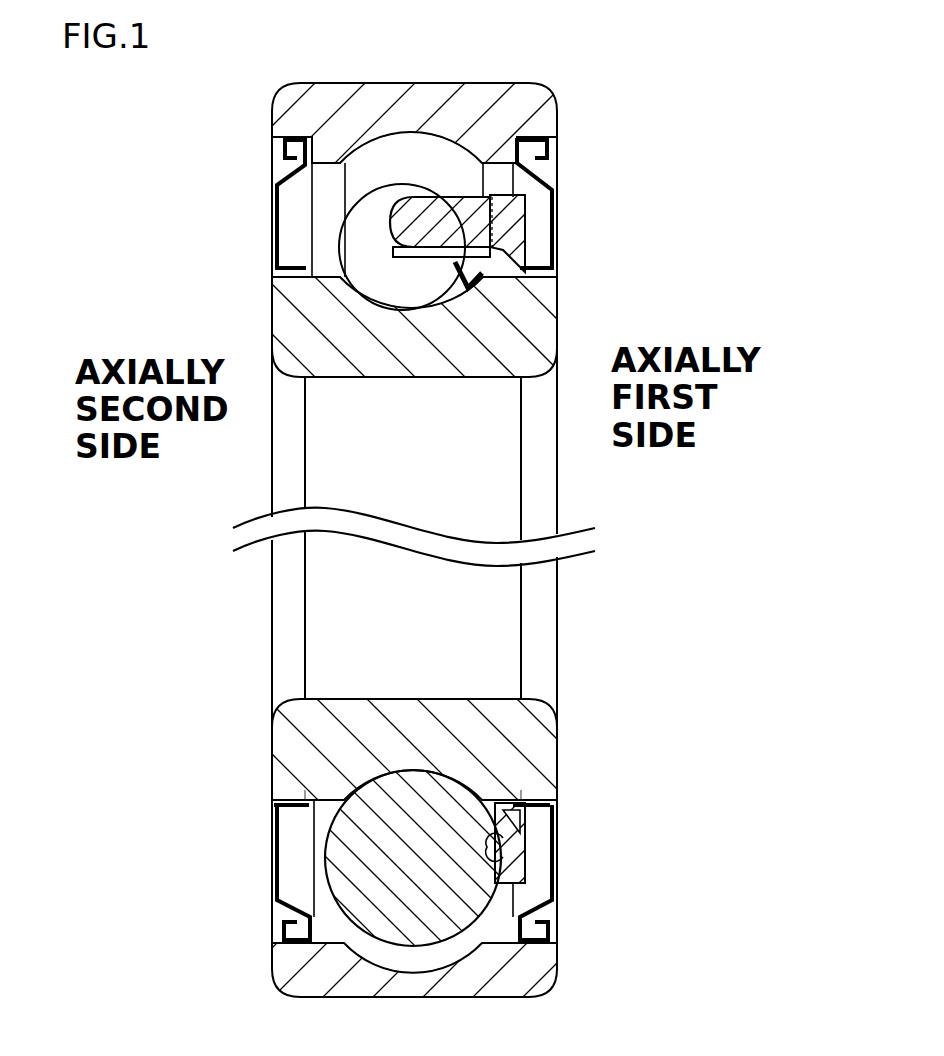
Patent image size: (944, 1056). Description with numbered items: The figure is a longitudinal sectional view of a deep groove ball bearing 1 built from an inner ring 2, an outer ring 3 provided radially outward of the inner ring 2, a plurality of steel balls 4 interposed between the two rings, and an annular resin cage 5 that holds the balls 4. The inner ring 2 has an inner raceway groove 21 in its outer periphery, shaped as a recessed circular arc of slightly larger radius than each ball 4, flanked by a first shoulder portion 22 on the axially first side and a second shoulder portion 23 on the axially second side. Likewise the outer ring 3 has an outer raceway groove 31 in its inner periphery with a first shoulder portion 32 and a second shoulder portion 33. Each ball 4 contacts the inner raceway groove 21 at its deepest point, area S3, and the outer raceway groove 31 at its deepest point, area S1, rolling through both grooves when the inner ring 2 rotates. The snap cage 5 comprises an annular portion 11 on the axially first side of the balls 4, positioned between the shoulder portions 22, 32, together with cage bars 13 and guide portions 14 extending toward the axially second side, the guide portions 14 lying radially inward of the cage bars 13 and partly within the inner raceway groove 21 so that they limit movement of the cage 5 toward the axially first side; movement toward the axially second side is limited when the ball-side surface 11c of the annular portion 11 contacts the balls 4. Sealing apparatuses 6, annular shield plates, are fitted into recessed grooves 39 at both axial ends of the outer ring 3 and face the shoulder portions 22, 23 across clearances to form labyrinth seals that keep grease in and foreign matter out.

The ball bearing 1 is at (510, 70).
The inner ring 2 is at (550, 302).
The outer ring 3 is at (548, 124).
The ball 4 is at (385, 225).
The cage 5 is at (540, 210).
The sealing apparatus 6 is at (278, 214).
The annular portion 11 is at (518, 236).
The ball-side surface of the annular portion 11c is at (505, 843).
The cage bar 13 is at (430, 215).
The guide portion 14 is at (468, 255).
The inner raceway groove 21 is at (415, 775).
The first shoulder portion 22 is at (520, 792).
The second shoulder portion 23 is at (310, 790).
The outer raceway groove 31 is at (414, 937).
The first shoulder portion 32 is at (500, 930).
The second shoulder portion 33 is at (328, 930).
The recessed groove 39 is at (283, 927).
The contact area at deepest point of outer raceway groove S1 is at (410, 140).
The contact area at deepest point of inner raceway groove S3 is at (412, 303).